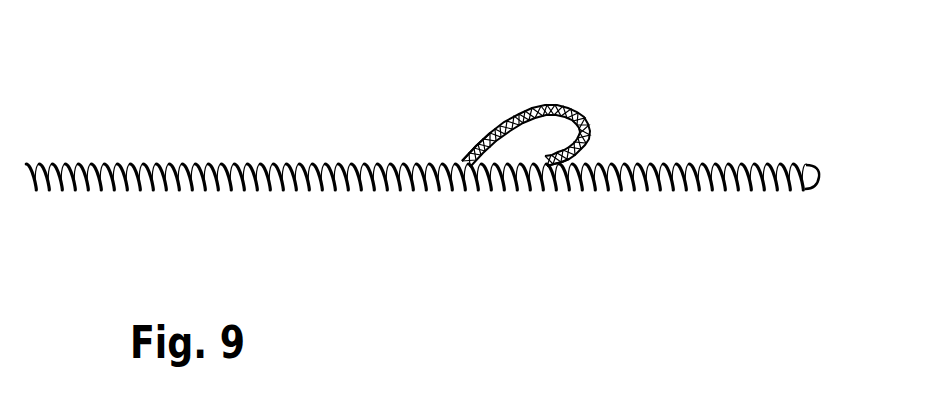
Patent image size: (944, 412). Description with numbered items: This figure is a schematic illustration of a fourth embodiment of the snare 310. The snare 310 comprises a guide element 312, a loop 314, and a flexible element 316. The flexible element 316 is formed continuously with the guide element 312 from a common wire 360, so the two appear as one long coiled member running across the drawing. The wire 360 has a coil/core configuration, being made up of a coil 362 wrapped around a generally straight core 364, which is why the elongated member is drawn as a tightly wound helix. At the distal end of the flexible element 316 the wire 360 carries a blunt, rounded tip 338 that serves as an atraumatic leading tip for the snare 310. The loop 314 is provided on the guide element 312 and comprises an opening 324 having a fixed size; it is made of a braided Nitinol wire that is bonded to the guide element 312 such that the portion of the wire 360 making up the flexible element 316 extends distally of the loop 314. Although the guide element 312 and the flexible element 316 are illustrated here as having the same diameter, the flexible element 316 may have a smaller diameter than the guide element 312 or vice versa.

The snare 310 is at (320, 50).
The guide element 312 is at (86, 165).
The loop 314 is at (574, 105).
The flexible element 316 is at (774, 161).
The opening 324 is at (523, 137).
The blunt, rounded tip 338 is at (812, 185).
The wire 360 is at (588, 279).
The coil 362 is at (512, 192).
The core 364 is at (550, 192).